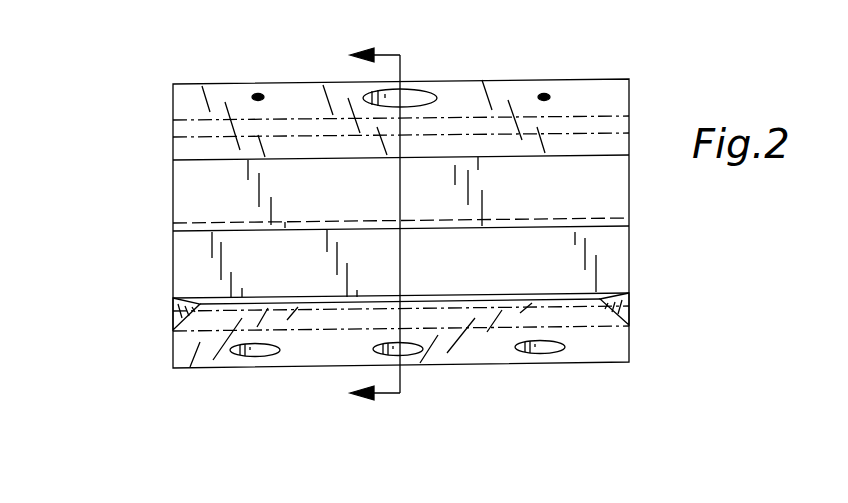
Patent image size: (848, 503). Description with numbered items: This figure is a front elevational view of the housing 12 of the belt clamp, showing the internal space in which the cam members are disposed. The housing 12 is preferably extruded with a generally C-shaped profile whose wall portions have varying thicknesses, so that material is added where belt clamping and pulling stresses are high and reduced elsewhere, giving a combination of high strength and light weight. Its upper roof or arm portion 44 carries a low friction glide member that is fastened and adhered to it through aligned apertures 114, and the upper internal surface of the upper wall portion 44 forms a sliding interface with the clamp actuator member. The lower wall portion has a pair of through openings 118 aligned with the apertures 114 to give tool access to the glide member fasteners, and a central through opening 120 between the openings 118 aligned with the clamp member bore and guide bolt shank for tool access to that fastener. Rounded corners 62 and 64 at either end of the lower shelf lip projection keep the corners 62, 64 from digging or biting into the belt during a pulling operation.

The housing 12 is at (96, 231).
The upper roof or arm portion 44 is at (175, 105).
The rounded corner 62 is at (175, 315).
The rounded corner 64 is at (631, 301).
The aperture 114 is at (257, 93).
The through opening 118 is at (254, 358).
The central through opening 120 is at (405, 352).